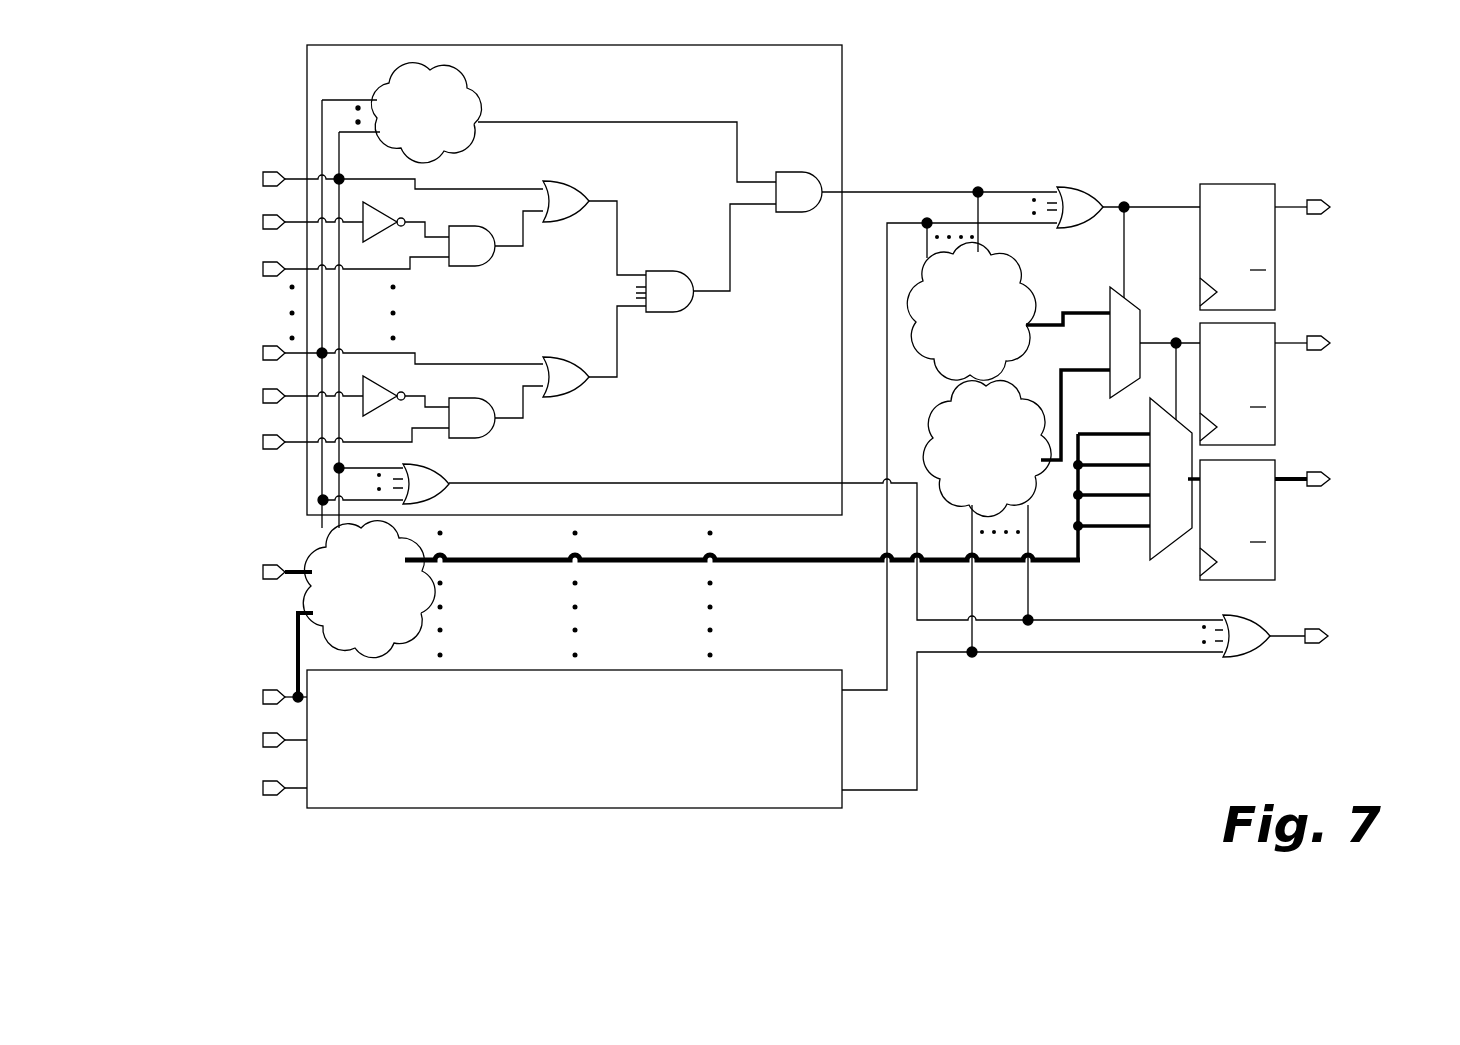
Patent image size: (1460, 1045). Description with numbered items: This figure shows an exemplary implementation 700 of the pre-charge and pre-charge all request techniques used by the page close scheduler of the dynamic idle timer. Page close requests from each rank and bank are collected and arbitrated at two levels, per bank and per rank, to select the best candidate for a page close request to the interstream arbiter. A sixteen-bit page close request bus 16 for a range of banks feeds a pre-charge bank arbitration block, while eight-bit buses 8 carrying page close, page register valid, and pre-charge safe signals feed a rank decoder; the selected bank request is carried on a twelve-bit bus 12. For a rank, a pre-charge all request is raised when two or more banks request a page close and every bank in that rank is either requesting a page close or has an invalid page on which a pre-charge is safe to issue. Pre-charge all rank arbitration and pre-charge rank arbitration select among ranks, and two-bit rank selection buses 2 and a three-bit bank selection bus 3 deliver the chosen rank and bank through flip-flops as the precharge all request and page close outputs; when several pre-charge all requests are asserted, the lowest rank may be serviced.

The pre-charge request generation circuit 700 is at (252, 70).
The 16-bit pgclose_req[23:8] bus 16 is at (297, 580).
The 12-bit bank arbitration bus 12 is at (766, 568).
The 8-bit rank 3 input buses 8 is at (303, 645).
The 2-bit rank selection buses 2 is at (1084, 320).
The 3-bit bank selection bus 3 is at (1285, 488).